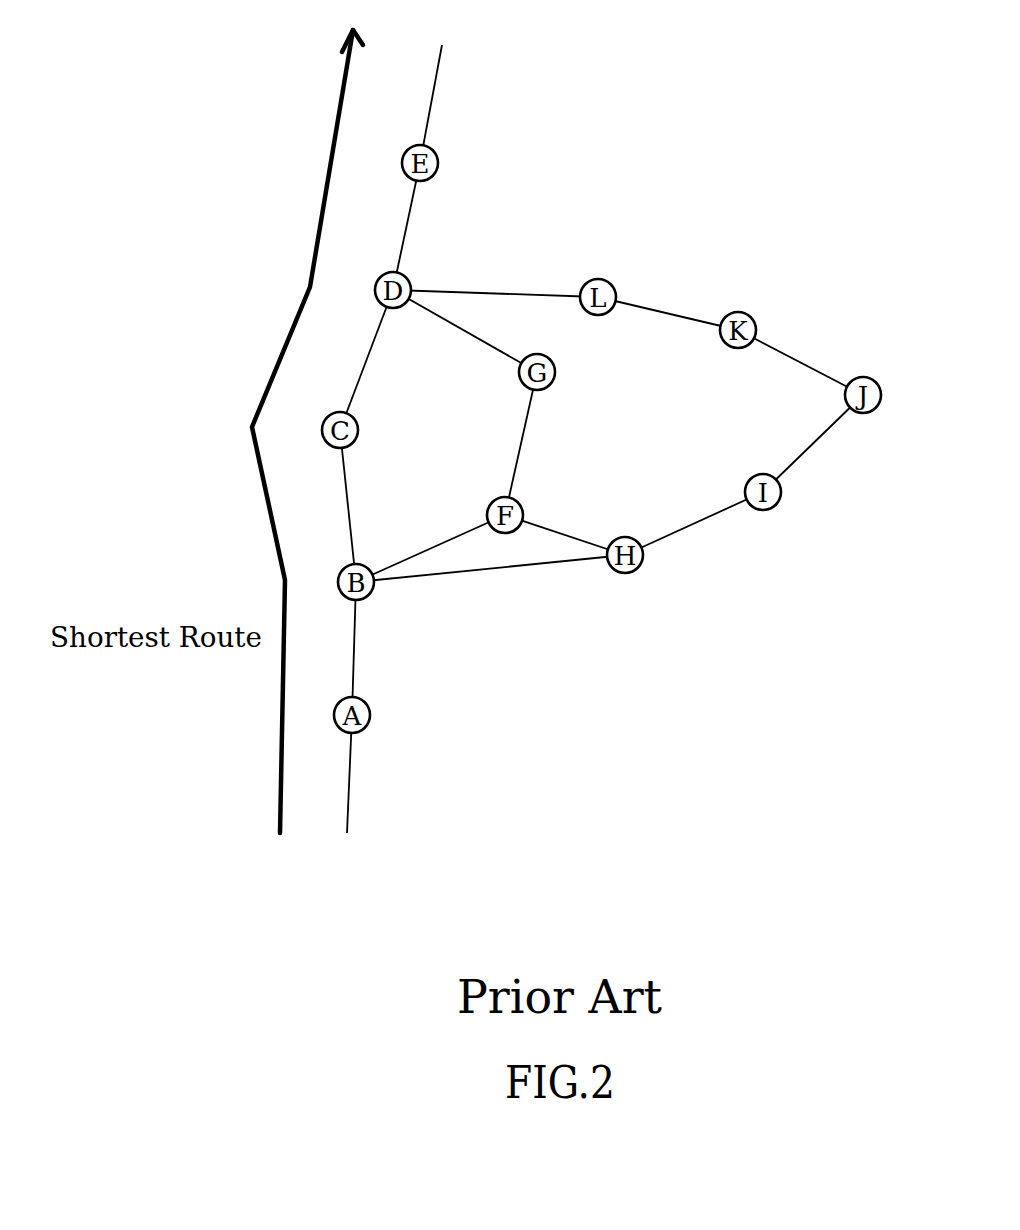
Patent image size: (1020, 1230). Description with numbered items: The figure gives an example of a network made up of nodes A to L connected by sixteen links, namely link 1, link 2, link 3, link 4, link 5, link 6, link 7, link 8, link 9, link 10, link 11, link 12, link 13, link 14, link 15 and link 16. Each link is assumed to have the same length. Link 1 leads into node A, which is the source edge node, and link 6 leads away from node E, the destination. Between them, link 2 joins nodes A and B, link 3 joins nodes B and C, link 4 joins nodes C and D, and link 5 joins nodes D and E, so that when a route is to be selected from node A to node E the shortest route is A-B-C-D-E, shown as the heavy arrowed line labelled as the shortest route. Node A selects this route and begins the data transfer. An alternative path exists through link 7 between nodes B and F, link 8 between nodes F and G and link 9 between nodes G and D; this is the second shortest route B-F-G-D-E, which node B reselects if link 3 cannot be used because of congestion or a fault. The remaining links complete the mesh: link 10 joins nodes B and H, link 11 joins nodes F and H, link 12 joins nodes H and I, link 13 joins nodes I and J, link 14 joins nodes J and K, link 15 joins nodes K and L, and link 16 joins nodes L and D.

The link 1 is at (337, 774).
The link 2 is at (341, 648).
The link 3 is at (335, 506).
The link 4 is at (366, 360).
The link 5 is at (403, 226).
The link 6 is at (425, 104).
The link 7 is at (430, 548).
The link 8 is at (528, 443).
The link 9 is at (465, 331).
The link 10 is at (490, 584).
The link 11 is at (565, 524).
The link 12 is at (694, 526).
The link 13 is at (813, 443).
The link 14 is at (800, 358).
The link 15 is at (668, 302).
The link 16 is at (495, 274).